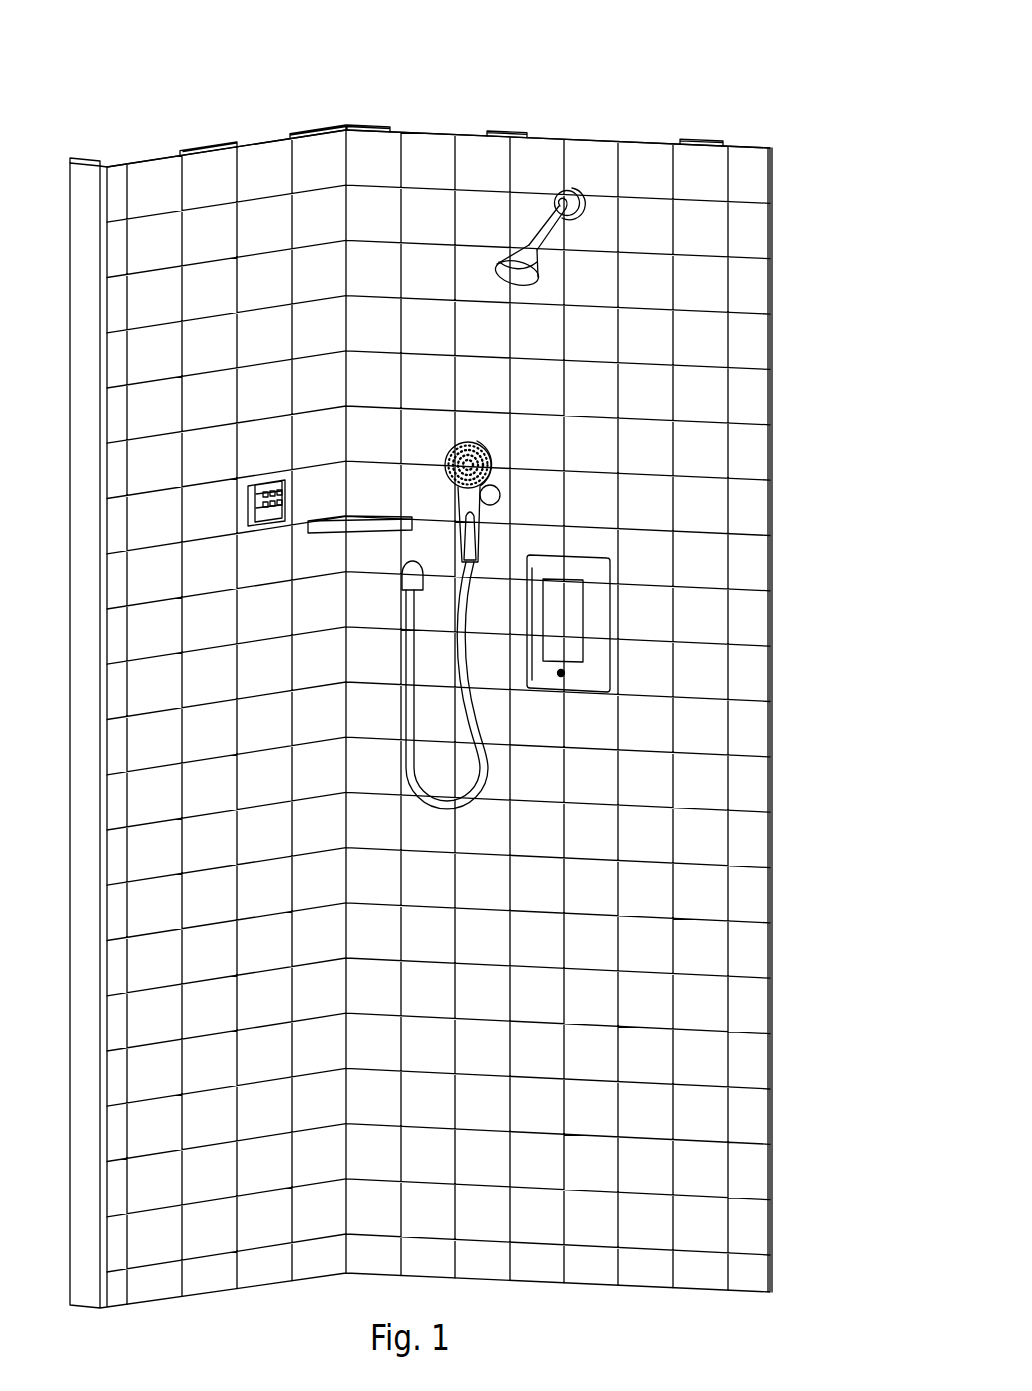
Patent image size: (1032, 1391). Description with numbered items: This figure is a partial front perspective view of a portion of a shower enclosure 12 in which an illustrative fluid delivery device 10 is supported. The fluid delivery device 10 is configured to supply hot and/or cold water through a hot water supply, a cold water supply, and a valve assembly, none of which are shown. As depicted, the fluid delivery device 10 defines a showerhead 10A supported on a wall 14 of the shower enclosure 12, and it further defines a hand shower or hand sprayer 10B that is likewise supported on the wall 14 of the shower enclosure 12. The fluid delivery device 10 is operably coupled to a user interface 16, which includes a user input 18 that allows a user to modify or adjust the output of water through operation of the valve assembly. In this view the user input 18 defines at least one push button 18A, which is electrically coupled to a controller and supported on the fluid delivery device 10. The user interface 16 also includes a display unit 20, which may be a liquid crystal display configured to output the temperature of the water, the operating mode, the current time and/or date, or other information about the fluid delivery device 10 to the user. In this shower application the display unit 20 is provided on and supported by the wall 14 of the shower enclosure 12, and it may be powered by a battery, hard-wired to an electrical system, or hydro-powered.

The fluid delivery device 10 is at (483, 657).
The showerhead 10A is at (523, 252).
The hand shower 10B is at (492, 462).
The shower enclosure 12 is at (786, 459).
The wall 14 is at (753, 782).
The user interface 16 is at (622, 623).
The user input 18 is at (267, 498).
The push button 18A is at (278, 486).
The display unit 20 is at (565, 605).